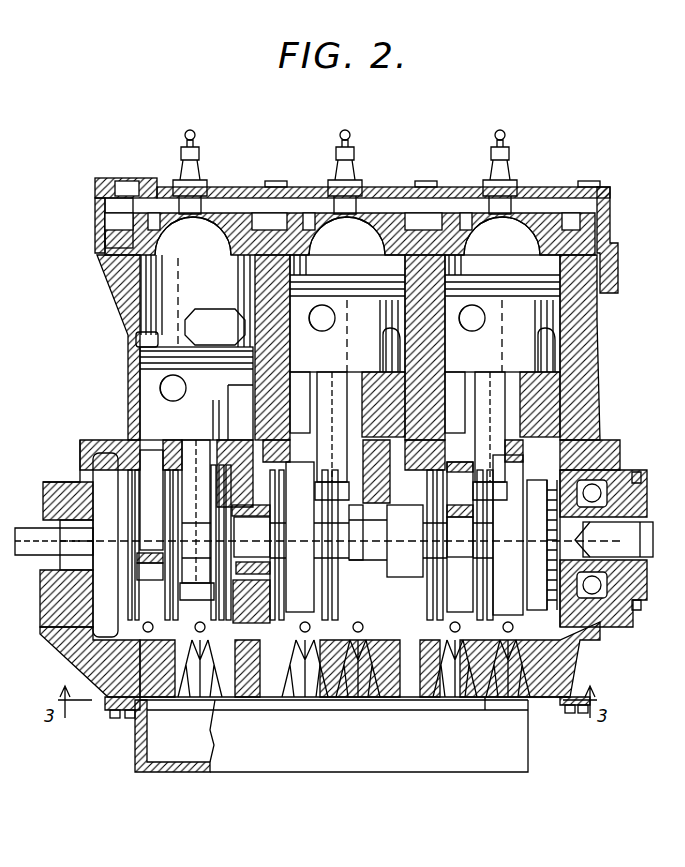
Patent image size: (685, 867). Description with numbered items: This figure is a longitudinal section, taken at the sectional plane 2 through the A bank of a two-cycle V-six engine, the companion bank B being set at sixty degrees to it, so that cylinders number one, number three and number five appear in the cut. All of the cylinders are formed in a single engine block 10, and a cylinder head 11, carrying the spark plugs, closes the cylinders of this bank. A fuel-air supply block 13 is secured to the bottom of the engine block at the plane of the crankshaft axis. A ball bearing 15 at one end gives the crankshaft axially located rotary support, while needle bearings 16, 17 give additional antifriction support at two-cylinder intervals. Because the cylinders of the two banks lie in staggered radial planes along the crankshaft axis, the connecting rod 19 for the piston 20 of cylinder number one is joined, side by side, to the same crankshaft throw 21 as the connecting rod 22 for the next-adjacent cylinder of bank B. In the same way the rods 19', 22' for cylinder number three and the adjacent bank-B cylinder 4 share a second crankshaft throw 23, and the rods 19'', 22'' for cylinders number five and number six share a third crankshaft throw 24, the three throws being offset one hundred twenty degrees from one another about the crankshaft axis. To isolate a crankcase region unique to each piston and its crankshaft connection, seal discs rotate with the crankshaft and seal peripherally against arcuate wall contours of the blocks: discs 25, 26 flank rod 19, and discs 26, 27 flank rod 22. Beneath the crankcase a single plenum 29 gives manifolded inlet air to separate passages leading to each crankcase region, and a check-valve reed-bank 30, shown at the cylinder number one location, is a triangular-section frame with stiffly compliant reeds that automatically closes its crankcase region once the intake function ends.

The engine 2 is at (5, 316).
The output shaft 4 is at (25, 563).
The engine block 10 is at (112, 401).
The cylinder head 11 is at (612, 253).
The fuel-air supply block 13 is at (596, 651).
The ball bearing 15 is at (615, 482).
The needle bearing 16 is at (413, 534).
The needle bearing 17 is at (266, 548).
The connecting rod 19 is at (502, 436).
The connecting rod 19' is at (347, 377).
The connecting rod 19'' is at (194, 436).
The piston 20 is at (502, 313).
The crankshaft throw 21 is at (467, 550).
The connecting rod 22 is at (443, 451).
The connecting rod 22' is at (285, 526).
The connecting rod 22'' is at (132, 526).
The crankshaft throw 23 is at (312, 552).
The crankshaft throw 24 is at (137, 600).
The seal disc 25 is at (527, 590).
The seal disc 26 is at (478, 576).
The seal disc 27 is at (438, 600).
The plenum 29 is at (392, 751).
The reed-bank 30 is at (500, 700).
The cylinder bank B is at (8, 272).